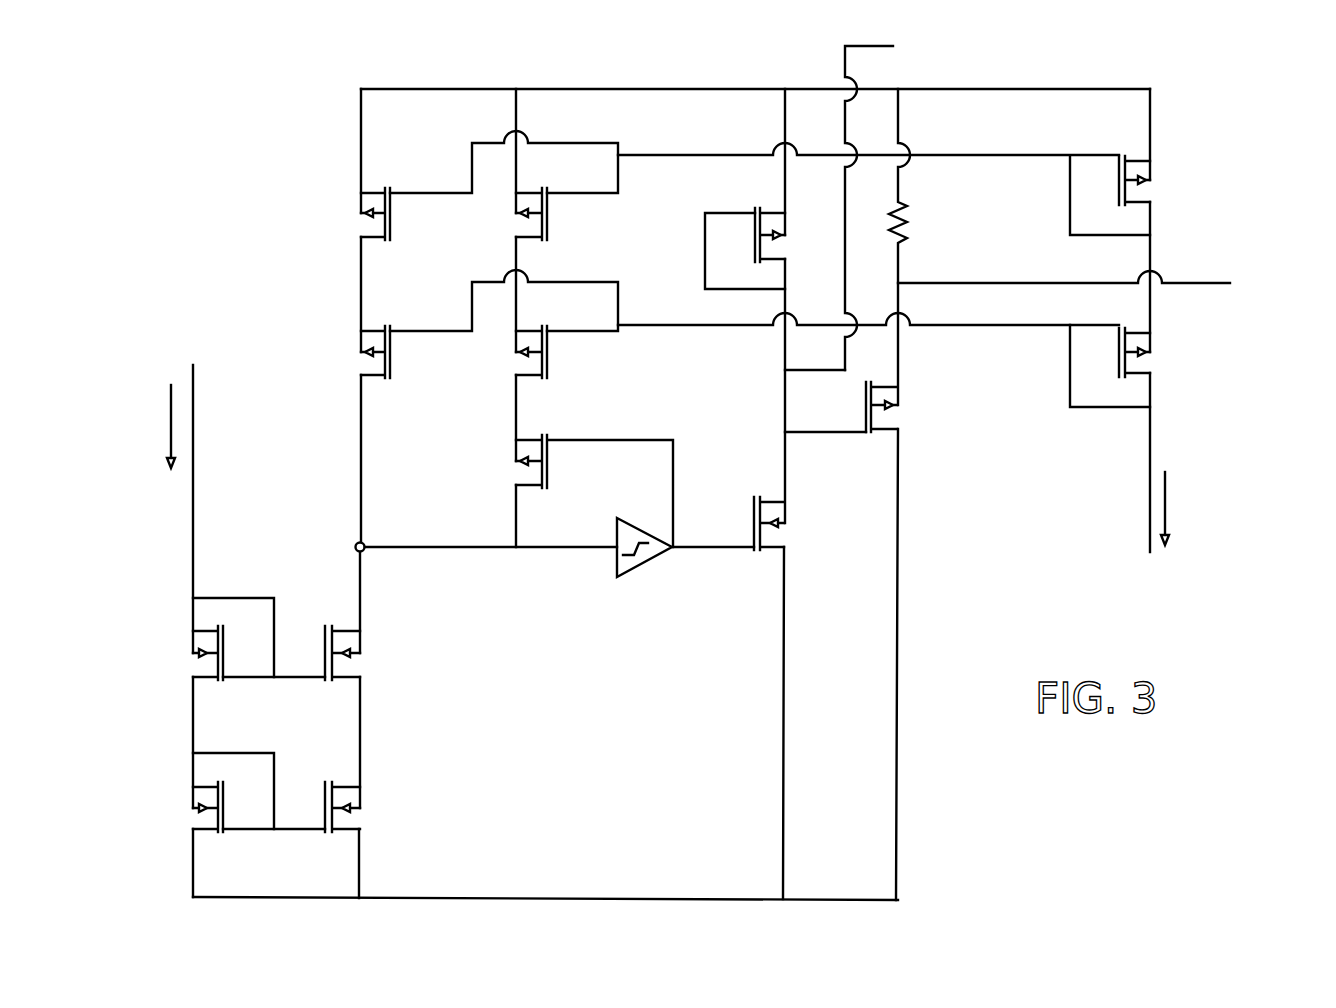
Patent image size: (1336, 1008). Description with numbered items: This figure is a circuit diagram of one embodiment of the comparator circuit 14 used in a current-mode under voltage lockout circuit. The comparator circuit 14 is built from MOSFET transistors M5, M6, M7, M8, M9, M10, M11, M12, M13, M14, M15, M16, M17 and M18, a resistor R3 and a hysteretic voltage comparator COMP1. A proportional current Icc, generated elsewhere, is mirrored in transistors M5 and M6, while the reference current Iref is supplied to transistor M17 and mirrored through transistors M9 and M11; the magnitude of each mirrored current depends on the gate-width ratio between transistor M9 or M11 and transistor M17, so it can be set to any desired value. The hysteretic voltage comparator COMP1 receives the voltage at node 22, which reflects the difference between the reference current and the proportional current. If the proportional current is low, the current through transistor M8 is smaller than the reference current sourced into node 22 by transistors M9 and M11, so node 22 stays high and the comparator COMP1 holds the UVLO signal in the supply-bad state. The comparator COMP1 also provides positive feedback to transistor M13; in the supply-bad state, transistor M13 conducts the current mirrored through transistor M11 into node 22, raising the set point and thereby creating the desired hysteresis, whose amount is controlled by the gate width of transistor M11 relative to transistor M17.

The comparator circuit 14 is at (224, 201).
The node 22 is at (355, 547).
The transistor M5 is at (185, 653).
The transistor M6 is at (185, 807).
The transistor M7 is at (365, 653).
The transistor M8 is at (365, 807).
The transistor M9 is at (399, 214).
The transistor M10 is at (403, 352).
The transistor M11 is at (557, 214).
The transistor M12 is at (557, 352).
The transistor M13 is at (594, 491).
The transistor M14 is at (796, 235).
The transistor M15 is at (798, 523).
The transistor M16 is at (910, 407).
The transistor M17 is at (1164, 180).
The transistor M18 is at (1164, 352).
The resistor R3 is at (921, 222).
The hysteretic voltage comparator COMP1 is at (681, 562).